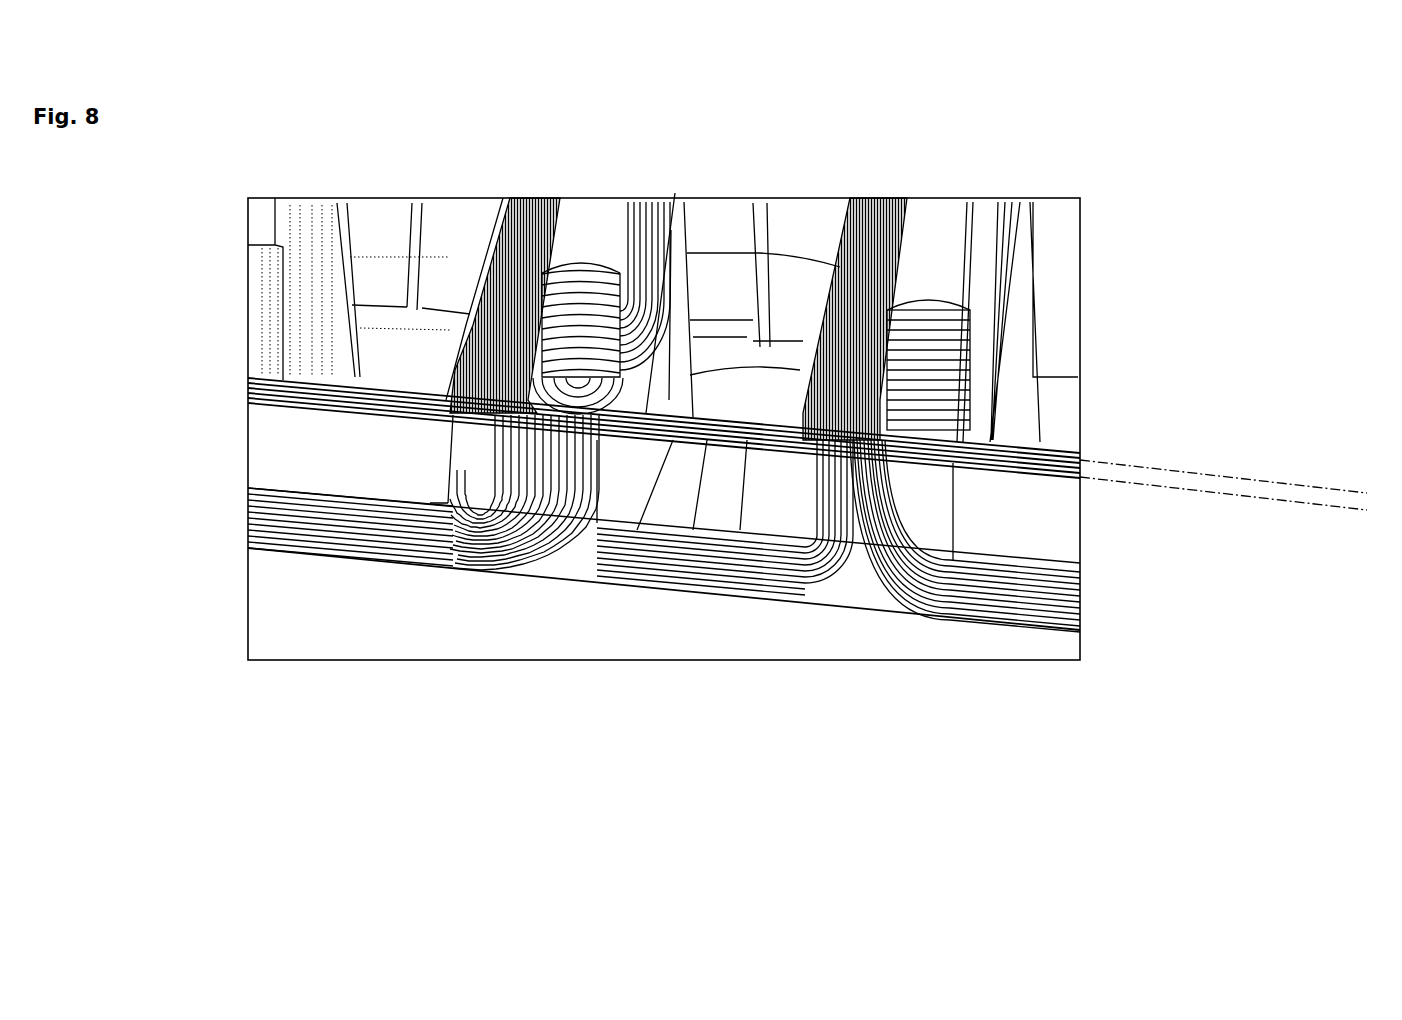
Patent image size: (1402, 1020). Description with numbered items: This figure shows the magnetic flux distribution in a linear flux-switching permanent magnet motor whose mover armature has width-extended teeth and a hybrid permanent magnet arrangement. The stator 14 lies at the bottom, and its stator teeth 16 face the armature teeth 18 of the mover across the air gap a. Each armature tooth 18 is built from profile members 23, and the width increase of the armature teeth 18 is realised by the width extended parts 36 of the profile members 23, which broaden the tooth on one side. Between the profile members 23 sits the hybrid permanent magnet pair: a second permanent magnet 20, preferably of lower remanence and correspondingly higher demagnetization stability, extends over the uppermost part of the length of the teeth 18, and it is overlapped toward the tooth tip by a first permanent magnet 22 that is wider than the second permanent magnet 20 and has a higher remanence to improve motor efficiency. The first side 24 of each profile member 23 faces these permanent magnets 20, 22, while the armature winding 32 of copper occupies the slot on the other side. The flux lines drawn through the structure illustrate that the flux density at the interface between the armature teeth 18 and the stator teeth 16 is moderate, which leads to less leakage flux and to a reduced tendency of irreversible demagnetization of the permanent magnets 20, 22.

The stator 14 is at (418, 600).
The stator tooth 16 is at (848, 548).
The armature tooth 18 is at (445, 410).
The second permanent magnet 20 is at (590, 245).
The first permanent magnet 22 is at (580, 354).
The profile member 23 is at (643, 283).
The first side of the profile member 24 is at (1020, 470).
The armature winding 32 is at (731, 234).
The width extended parts of the profile members 36 is at (482, 355).
The air gap a is at (1223, 479).